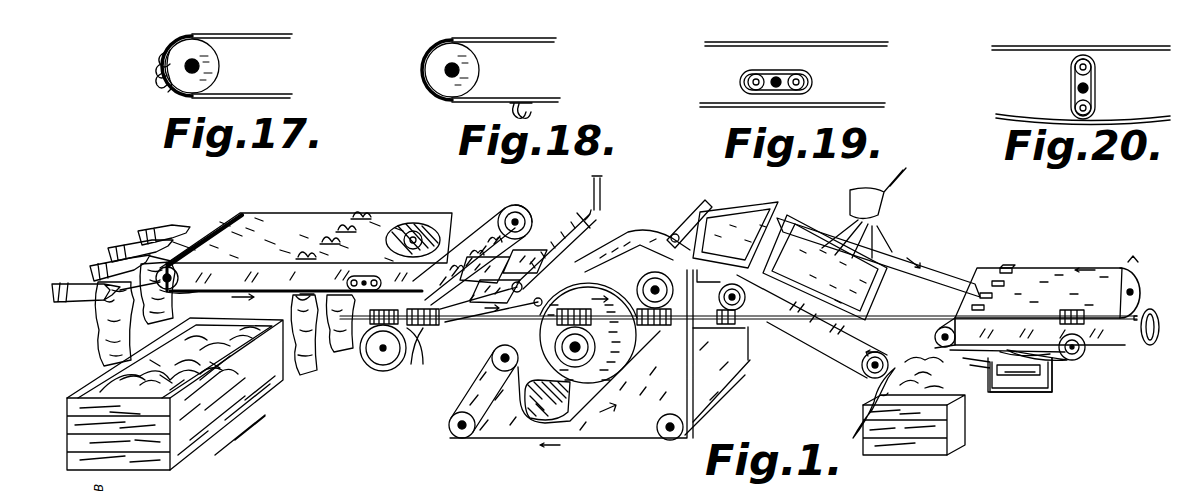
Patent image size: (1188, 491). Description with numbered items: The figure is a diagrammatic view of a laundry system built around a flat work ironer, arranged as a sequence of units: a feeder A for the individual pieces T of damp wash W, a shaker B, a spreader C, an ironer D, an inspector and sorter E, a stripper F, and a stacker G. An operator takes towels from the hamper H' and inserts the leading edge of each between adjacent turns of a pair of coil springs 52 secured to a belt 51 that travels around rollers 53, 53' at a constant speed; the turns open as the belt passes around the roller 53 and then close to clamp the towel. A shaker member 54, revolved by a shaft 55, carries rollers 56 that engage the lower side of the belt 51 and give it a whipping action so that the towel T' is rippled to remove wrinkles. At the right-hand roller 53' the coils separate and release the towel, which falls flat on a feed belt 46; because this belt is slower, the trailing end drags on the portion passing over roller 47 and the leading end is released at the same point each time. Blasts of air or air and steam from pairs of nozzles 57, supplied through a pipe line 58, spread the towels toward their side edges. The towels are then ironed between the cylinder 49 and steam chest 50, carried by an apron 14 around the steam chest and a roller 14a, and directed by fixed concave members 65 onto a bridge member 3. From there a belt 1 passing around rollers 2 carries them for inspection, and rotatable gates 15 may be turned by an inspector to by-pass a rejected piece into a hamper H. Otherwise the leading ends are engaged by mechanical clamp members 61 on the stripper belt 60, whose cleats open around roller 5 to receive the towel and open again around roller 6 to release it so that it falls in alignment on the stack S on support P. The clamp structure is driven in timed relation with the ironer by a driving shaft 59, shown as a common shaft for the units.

In FIG. 1, the belt 1 is at (823, 345).
In FIG. 1, the rollers 2 is at (862, 370).
In FIG. 1, the bridge member 3 is at (762, 206).
In FIG. 1, the roller 5 is at (997, 265).
In FIG. 1, the roller 6 is at (1140, 275).
In FIG. 1, the apron 14 is at (748, 360).
In FIG. 1, the roller 14a is at (698, 328).
In FIG. 1, the rotatable bridge members or gates 15 is at (920, 340).
In FIG. 1, the feed belt 46 is at (480, 305).
In FIG. 1, the roller 47 is at (398, 366).
In FIG. 1, the cylinder 49 is at (547, 334).
In FIG. 1, the steam chest 50 is at (530, 415).
In FIG. 17, the belt 51 is at (268, 34).
In FIG. 18, the belt 51 is at (520, 40).
In FIG. 19, the belt 51 is at (826, 44).
In FIG. 20, the belt 51 is at (1056, 47).
In FIG. 1, the belt 51 is at (287, 225).
In FIG. 17, the coil springs 52 is at (172, 72).
In FIG. 18, the coil springs 52 is at (532, 108).
In FIG. 1, the coil springs 52 is at (357, 215).
In FIG. 17, the roller 53 is at (223, 66).
In FIG. 18, the roller 53 is at (481, 70).
In FIG. 1, the roller 53 is at (197, 255).
In FIG. 1, the roller 53' is at (491, 210).
In FIG. 19, the shaker member 54 is at (778, 76).
In FIG. 20, the shaker member 54 is at (1096, 98).
In FIG. 1, the shaker member 54 is at (418, 235).
In FIG. 19, the shaft 55 is at (792, 95).
In FIG. 20, the shaft 55 is at (1076, 85).
In FIG. 1, the shaft 55 is at (360, 275).
In FIG. 19, the rollers 56 is at (746, 80).
In FIG. 20, the rollers 56 is at (1096, 66).
In FIG. 1, the rollers 56 is at (407, 237).
In FIG. 1, the nozzles 57 is at (532, 276).
In FIG. 1, the pipe line 58 is at (603, 182).
In FIG. 1, the driving shaft 59 is at (1137, 334).
In FIG. 1, the stripper belt 60 is at (1093, 275).
In FIG. 1, the mechanical clamp members 61 is at (1012, 275).
In FIG. 1, the fixed concave members 65 is at (683, 228).
In FIG. 1, the feeder A is at (199, 207).
In FIG. 1, the shaker B is at (480, 240).
In FIG. 1, the spreader C is at (573, 206).
In FIG. 1, the ironer D is at (632, 252).
In FIG. 1, the inspector and sorter E is at (878, 232).
In FIG. 1, the stripper F is at (1045, 296).
In FIG. 1, the stacker G is at (1036, 388).
In FIG. 1, the hamper H is at (914, 422).
In FIG. 1, the hamper H' is at (182, 394).
In FIG. 1, the support P is at (1017, 376).
In FIG. 1, the stack S is at (1037, 374).
In FIG. 1, the pieces T is at (488, 350).
In FIG. 1, the towel T' is at (702, 346).
In FIG. 1, the damp wash W is at (120, 378).